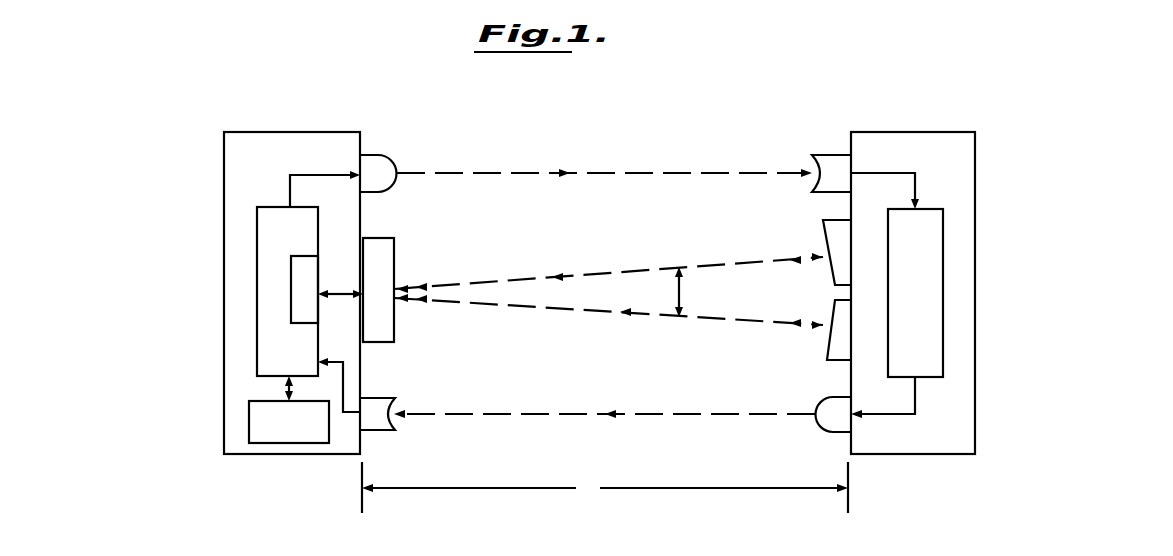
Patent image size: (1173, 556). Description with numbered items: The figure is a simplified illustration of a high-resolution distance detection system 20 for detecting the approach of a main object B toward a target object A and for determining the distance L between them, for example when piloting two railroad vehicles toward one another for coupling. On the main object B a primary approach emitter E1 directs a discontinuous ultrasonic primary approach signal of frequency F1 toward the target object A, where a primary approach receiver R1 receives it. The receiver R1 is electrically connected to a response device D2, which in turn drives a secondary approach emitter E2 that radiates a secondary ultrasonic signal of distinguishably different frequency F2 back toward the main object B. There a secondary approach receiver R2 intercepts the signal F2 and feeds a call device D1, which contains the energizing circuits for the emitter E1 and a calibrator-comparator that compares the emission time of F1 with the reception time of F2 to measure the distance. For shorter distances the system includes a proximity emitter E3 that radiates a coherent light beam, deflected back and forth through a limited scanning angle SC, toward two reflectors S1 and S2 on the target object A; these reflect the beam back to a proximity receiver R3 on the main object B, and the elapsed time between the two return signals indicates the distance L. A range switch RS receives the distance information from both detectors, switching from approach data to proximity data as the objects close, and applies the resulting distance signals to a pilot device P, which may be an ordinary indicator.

The high-resolution distance detection system 20 is at (553, 140).
The main object B is at (352, 131).
The target object A is at (977, 131).
The primary approach emitter E1 is at (399, 162).
The primary approach receiver R1 is at (812, 160).
The secondary approach emitter E2 is at (818, 408).
The secondary approach receiver R2 is at (382, 431).
The proximity emitter E3 is at (394, 240).
The proximity receiver R3 is at (394, 325).
The call device D1 is at (257, 250).
The range switch RS is at (291, 298).
The pilot device P is at (262, 437).
The response device D2 is at (935, 378).
The reflector S1 is at (823, 238).
The reflector S2 is at (828, 345).
The scanning angle SC is at (840, 303).
The primary approach signal frequency F1 is at (650, 180).
The secondary approach signal frequency F2 is at (703, 424).
The distance between the two objects L is at (605, 487).